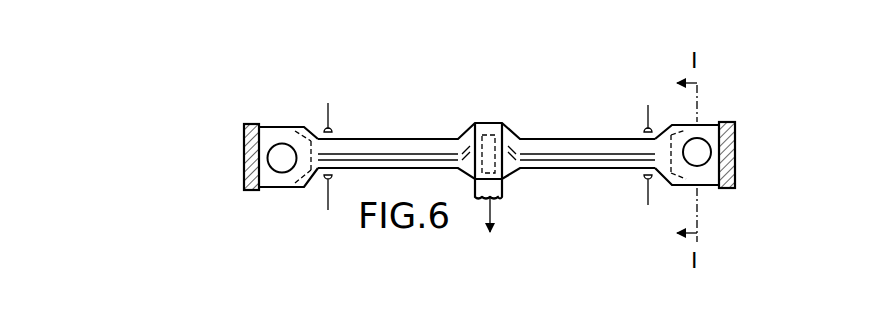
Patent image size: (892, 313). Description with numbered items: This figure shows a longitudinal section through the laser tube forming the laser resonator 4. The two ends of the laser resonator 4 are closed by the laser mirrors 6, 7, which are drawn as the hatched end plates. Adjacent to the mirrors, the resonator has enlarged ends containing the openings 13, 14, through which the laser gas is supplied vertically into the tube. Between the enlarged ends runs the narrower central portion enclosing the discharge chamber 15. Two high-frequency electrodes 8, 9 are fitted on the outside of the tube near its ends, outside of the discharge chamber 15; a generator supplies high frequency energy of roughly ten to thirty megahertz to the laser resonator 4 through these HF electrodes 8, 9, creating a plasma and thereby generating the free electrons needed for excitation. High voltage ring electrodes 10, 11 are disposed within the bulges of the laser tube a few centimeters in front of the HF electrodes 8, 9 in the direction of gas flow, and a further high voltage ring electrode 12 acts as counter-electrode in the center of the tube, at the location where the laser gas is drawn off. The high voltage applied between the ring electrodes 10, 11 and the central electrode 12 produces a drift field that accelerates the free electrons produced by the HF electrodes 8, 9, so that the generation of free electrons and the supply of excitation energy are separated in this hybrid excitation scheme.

The laser resonator 4 is at (558, 104).
The laser mirror 6 is at (735, 150).
The laser mirror 7 is at (244, 147).
The high-frequency electrode 8 is at (331, 121).
The high-frequency electrode 9 is at (650, 116).
The high voltage ring electrode 10 is at (300, 189).
The high voltage ring electrode 11 is at (677, 186).
The high voltage ring electrode 12 is at (489, 134).
The opening 13 is at (276, 163).
The opening 14 is at (700, 166).
The discharge chamber 15 is at (566, 161).